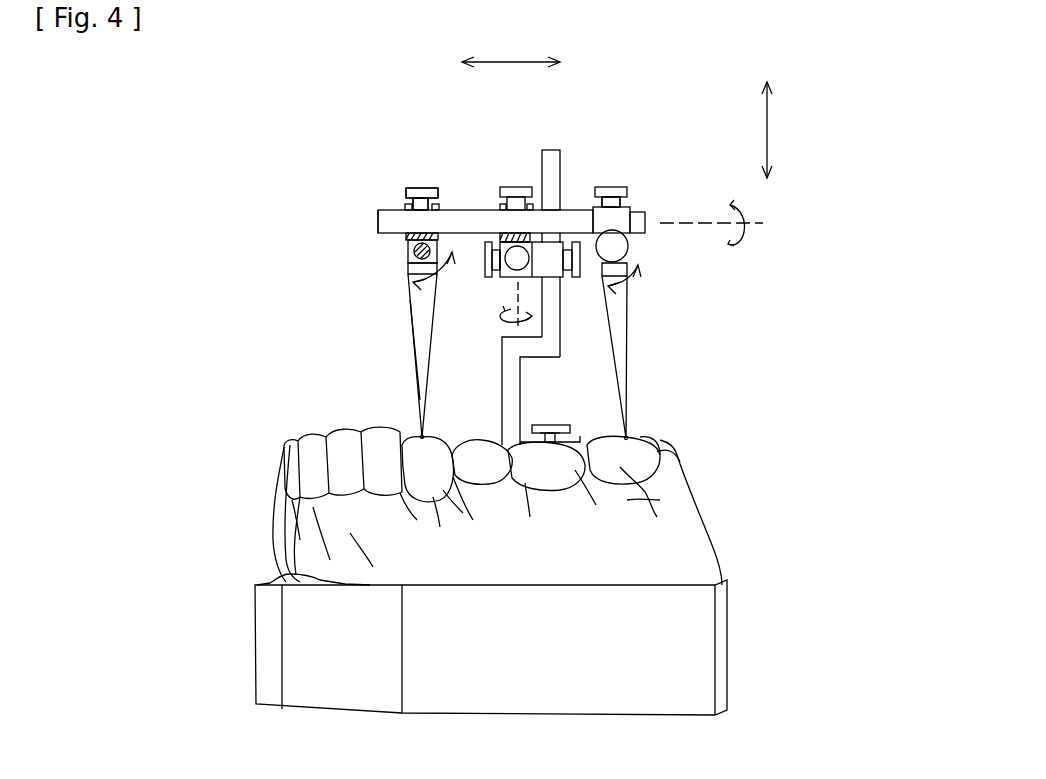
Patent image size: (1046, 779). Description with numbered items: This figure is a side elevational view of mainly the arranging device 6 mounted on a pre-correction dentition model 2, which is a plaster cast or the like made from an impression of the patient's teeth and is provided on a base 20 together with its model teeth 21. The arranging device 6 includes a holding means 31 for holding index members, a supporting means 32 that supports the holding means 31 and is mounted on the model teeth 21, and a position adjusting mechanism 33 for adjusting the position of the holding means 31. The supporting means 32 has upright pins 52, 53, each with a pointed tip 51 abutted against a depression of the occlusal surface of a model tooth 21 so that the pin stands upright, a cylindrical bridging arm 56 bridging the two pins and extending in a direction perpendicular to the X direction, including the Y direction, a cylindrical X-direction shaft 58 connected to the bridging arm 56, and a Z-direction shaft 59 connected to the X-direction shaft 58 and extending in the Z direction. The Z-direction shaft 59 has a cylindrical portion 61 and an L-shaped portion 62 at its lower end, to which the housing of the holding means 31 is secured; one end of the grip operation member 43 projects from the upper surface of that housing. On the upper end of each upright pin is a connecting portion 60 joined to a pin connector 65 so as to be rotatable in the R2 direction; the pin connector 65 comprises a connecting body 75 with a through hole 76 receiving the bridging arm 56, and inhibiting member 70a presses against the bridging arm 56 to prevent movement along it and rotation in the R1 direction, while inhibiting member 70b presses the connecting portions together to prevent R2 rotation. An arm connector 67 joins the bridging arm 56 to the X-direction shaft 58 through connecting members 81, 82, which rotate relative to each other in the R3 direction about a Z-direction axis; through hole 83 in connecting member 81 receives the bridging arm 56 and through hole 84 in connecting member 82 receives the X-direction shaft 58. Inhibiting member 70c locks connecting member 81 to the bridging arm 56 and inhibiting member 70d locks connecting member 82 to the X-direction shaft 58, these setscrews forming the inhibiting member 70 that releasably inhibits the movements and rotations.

The pre-correction dentition model 2 is at (270, 458).
The arranging device 6 is at (374, 217).
The base 20 is at (513, 705).
The model teeth 21 is at (482, 497).
The holding means 31 is at (569, 424).
The supporting means 32 is at (406, 327).
The position adjusting mechanism 33 is at (422, 186).
The grip operation member 43 is at (548, 425).
The tip 51 is at (418, 432).
The upright pin 52 is at (623, 349).
The upright pin 53 is at (417, 350).
The bridging arm 56 is at (378, 223).
The X-direction shaft 58 is at (521, 262).
The Z-direction shaft 59 is at (550, 160).
The connecting portion 60 is at (408, 262).
The cylindrical portion 61 is at (553, 177).
The L-shaped portion 62 is at (502, 408).
The pin connector 65 is at (636, 211).
The arm connector 67 is at (517, 185).
The inhibiting member 70 is at (606, 200).
The inhibiting member 70a is at (403, 206).
The inhibiting member 70b is at (622, 248).
The inhibiting member 70c is at (500, 206).
The inhibiting member 70d is at (485, 262).
The connecting body 75 is at (406, 211).
The through hole 76 is at (406, 235).
The connecting member 81 is at (515, 233).
The connecting member 82 is at (501, 265).
The through hole 83 is at (500, 240).
The through hole 84 is at (528, 270).
The R1 direction R1 is at (745, 236).
The R2 direction R2 is at (447, 270).
The R3 direction R3 is at (500, 323).
The Y direction Y is at (510, 60).
The Z direction Z is at (769, 130).